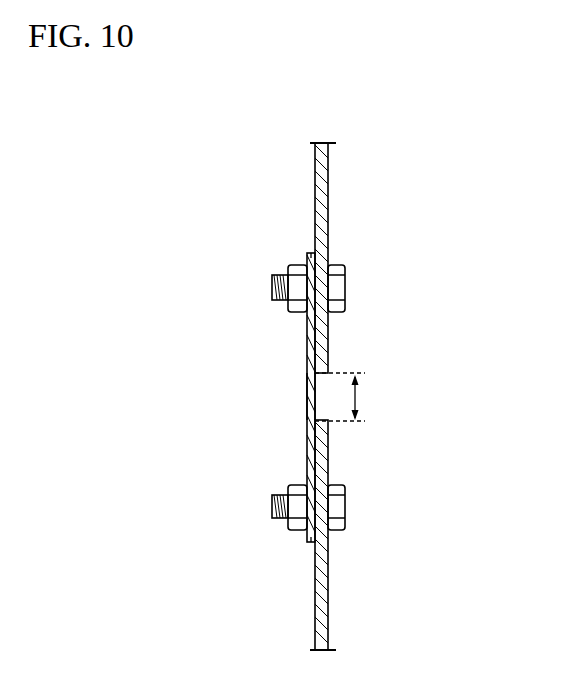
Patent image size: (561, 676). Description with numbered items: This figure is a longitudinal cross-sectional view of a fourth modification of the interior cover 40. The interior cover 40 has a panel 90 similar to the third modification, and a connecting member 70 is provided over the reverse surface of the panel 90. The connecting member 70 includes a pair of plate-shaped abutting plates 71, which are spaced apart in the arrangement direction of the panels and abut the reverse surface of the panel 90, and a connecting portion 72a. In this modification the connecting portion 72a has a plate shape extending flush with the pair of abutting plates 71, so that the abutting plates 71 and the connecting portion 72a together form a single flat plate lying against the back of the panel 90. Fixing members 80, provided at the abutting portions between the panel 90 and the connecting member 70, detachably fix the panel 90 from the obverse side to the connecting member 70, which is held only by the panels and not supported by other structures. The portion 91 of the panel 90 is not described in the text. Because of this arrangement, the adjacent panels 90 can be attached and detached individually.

The interior cover 40 is at (440, 110).
The connecting member 70 is at (241, 348).
The abutting plate 71 is at (307, 257).
The connecting portion 72a is at (312, 391).
The fixing member 80 is at (335, 289).
The panel 90 is at (362, 163).
The plate body 91 is at (322, 229).